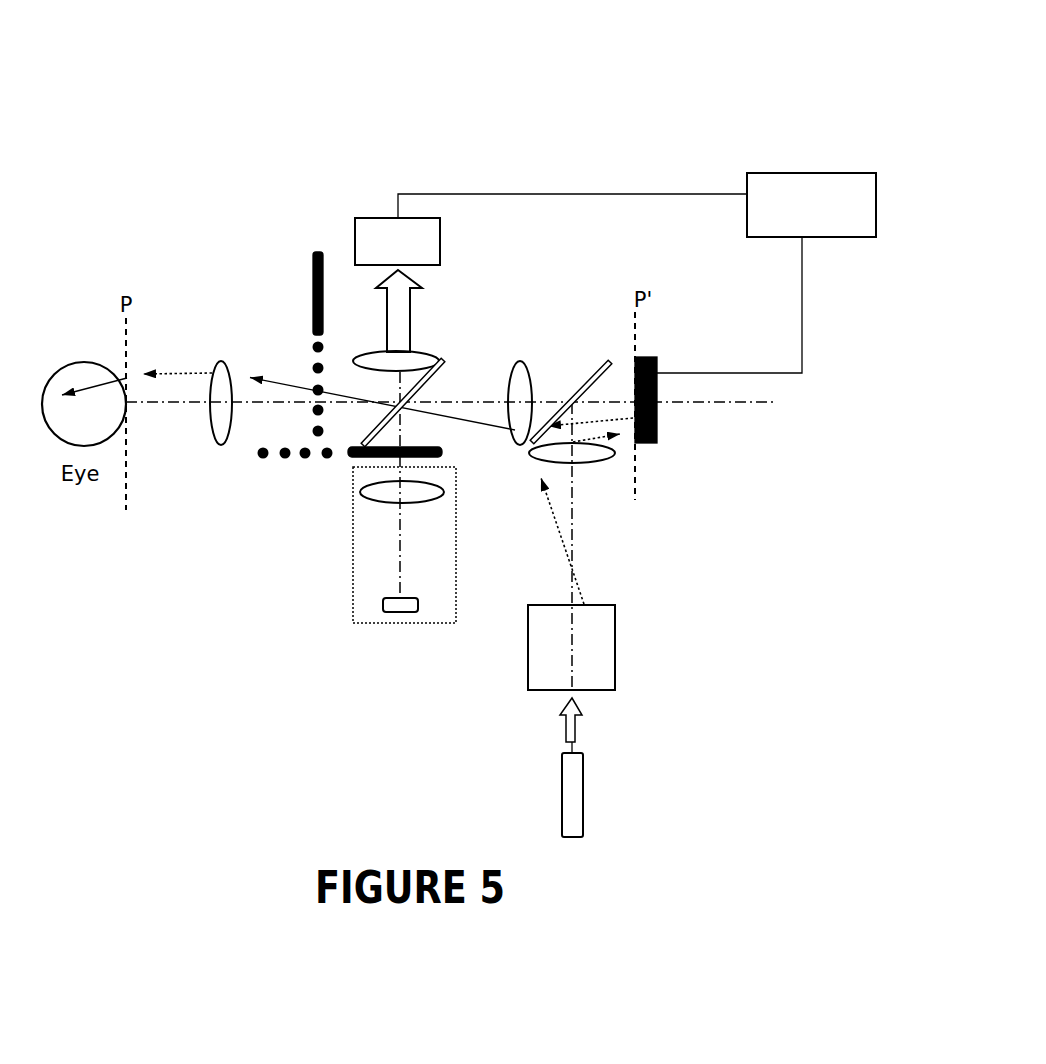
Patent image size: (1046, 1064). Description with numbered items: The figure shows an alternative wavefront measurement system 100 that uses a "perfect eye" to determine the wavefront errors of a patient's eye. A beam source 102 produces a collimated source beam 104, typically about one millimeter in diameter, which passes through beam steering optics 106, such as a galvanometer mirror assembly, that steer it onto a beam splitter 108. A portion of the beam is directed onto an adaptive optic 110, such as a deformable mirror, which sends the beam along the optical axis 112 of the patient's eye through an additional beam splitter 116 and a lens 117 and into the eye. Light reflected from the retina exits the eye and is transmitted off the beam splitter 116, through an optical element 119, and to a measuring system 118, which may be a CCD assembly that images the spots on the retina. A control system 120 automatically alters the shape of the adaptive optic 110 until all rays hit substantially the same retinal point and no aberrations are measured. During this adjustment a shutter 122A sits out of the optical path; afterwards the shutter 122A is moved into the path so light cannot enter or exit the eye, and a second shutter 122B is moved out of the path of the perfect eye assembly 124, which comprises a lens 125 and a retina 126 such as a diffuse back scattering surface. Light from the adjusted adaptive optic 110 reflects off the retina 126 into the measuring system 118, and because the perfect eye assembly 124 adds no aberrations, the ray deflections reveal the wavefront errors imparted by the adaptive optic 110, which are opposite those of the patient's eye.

The system 100 is at (600, 92).
The beam source 102 is at (583, 802).
The source beam 104 is at (575, 730).
The beam steering optics 106 is at (615, 657).
The beam splitter 108 is at (594, 365).
The adaptive optic 110 is at (657, 425).
The optical axis 112 is at (167, 404).
The beam splitter 116 is at (443, 360).
The lens 117 is at (222, 361).
The measuring system 118 is at (375, 218).
The optical element 119 is at (415, 352).
The control system 120 is at (811, 205).
The shutter 122A is at (317, 252).
The second shutter 122B is at (357, 460).
The perfect eye assembly 124 is at (366, 597).
The lens 125 is at (442, 492).
The retina 126 is at (400, 612).